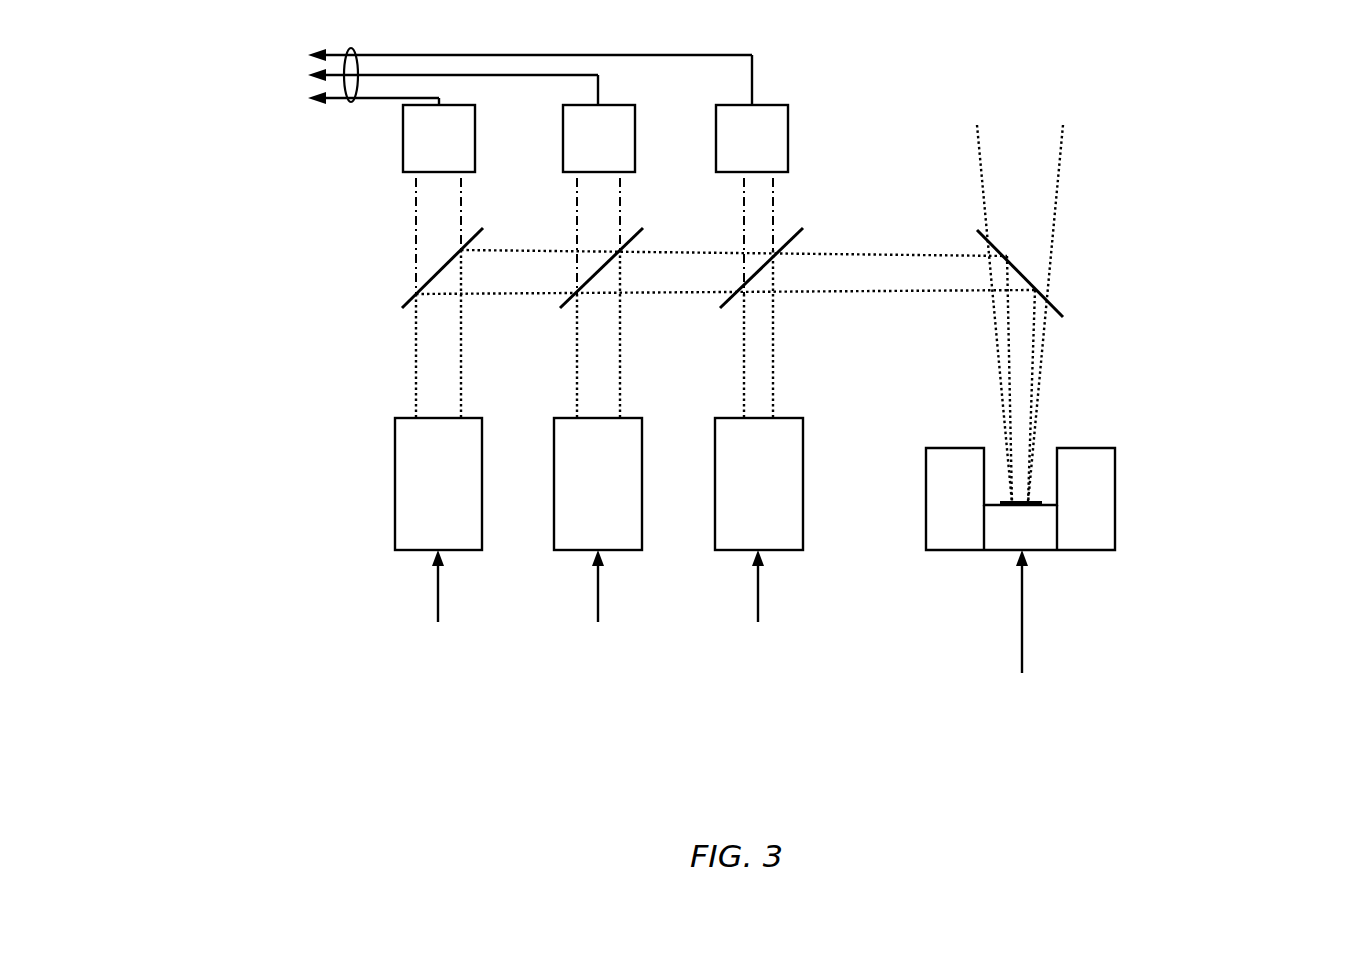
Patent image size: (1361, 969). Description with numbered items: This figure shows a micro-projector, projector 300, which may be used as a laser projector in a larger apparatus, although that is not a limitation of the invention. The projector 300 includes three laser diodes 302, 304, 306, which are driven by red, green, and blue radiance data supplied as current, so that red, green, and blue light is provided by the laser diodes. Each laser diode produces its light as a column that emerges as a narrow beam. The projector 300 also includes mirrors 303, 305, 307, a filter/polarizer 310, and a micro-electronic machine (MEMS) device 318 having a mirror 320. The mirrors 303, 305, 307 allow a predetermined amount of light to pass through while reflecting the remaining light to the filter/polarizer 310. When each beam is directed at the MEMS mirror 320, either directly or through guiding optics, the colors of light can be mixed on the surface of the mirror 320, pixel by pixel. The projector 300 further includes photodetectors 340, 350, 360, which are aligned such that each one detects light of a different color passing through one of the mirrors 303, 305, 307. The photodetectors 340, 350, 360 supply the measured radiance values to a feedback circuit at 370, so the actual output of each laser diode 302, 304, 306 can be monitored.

The projector 300 is at (1278, 657).
The laser diode 302 is at (465, 551).
The mirror 303 is at (401, 309).
The laser diode 304 is at (625, 551).
The mirror 305 is at (561, 309).
The laser diode 306 is at (786, 551).
The mirror 307 is at (721, 309).
The filter/polarizer 310 is at (1056, 305).
The micro-electronic machine (MEMS) device 318 is at (948, 551).
The mirror 320 is at (1005, 500).
The photodetector 340 is at (476, 160).
The photodetector 350 is at (636, 160).
The photodetector 360 is at (789, 160).
The feedback circuit connection 370 is at (352, 101).